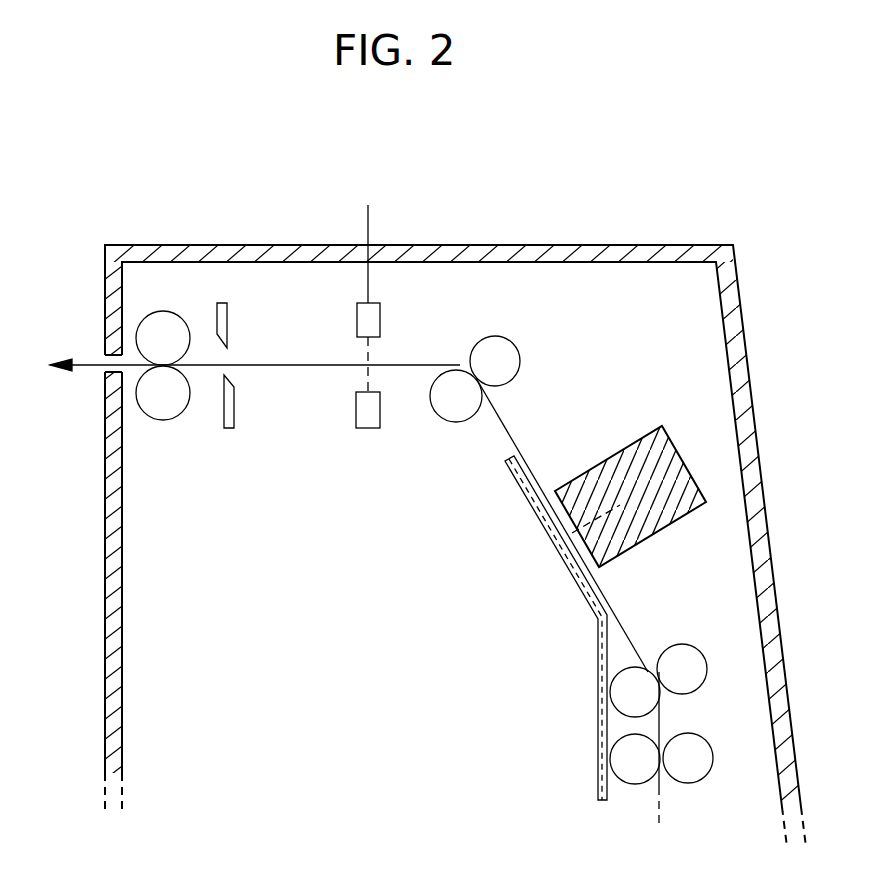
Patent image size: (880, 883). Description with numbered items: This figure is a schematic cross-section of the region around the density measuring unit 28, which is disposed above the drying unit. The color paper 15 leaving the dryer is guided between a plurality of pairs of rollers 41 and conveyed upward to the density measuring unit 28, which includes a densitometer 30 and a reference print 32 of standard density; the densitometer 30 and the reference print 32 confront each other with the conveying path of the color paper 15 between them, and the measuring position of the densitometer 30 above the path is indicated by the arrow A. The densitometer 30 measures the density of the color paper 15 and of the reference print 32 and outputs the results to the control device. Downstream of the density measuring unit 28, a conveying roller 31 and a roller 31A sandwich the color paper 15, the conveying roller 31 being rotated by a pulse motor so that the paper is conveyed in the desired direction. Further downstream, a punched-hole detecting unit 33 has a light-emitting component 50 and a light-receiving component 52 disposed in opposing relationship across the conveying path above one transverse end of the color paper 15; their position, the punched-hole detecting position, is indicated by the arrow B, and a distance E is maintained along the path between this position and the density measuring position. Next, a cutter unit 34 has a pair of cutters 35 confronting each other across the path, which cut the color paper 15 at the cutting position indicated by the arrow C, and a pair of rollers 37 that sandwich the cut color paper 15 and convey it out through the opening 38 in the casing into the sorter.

The color paper 15 is at (88, 362).
The density measuring unit 28 is at (705, 569).
The densitometer 30 is at (692, 483).
The conveying roller 31 is at (459, 388).
The roller 31A is at (505, 350).
The reference print 32 is at (570, 540).
The punched-hole detecting unit 33 is at (362, 452).
The cutter unit 34 is at (216, 452).
The cutters 35 is at (238, 374).
The rollers 37 is at (177, 387).
The opening 38 is at (107, 373).
The pairs of rollers 41 is at (647, 657).
The light-emitting components 50 is at (357, 320).
The light-receiving components 52 is at (356, 417).
The arrow indicating measuring position A is at (569, 500).
The arrow indicating punched-hole detecting position B is at (382, 352).
The arrow indicating cutting position C is at (213, 372).
The distance E is at (697, 447).